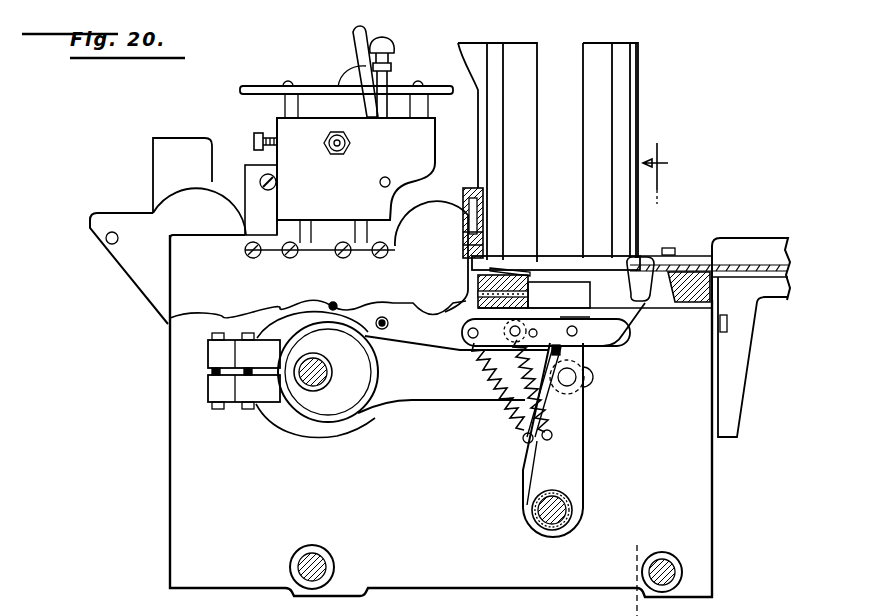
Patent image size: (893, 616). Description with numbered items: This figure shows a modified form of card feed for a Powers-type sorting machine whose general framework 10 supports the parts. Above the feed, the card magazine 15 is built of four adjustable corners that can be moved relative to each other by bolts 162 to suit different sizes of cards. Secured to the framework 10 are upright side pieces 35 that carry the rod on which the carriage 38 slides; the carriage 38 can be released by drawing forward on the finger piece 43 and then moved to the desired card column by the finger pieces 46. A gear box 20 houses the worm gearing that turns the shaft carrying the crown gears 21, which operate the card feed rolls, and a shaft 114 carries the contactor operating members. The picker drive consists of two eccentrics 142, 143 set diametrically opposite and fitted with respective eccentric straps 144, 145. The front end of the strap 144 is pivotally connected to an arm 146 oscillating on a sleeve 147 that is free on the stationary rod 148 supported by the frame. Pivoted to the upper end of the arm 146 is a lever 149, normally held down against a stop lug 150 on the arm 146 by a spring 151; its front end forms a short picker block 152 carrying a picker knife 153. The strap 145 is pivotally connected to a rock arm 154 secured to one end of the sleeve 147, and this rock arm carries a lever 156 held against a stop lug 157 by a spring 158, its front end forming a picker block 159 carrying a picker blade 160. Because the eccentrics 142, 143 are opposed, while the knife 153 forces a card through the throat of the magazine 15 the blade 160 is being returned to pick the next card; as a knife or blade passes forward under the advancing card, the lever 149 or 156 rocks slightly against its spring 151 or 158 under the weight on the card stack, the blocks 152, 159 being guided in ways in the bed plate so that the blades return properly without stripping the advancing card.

The framework 10 is at (690, 535).
The card magazine 15 is at (623, 127).
The gear box 20 is at (199, 186).
The crown gears 21 is at (668, 173).
The upright side pieces 35 is at (354, 189).
The carriage 38 is at (253, 172).
The finger piece 43 is at (356, 50).
The finger pieces 46 is at (387, 52).
The shaft 114 is at (313, 384).
The eccentric 142 is at (337, 403).
The eccentric 143 is at (277, 412).
The eccentric strap 144 is at (410, 390).
The eccentric strap 145 is at (257, 415).
The arm 146 is at (572, 432).
The sleeve 147 is at (567, 496).
The stationary rod 148 is at (570, 510).
The lever 149 is at (586, 325).
The stop lug 150 is at (570, 353).
The spring 151 is at (530, 384).
The picker block 152 is at (620, 310).
The picker knife 153 is at (640, 255).
The rock arm 154 is at (525, 463).
The lever 156 is at (462, 331).
The stop lug 157 is at (522, 363).
The spring 158 is at (508, 409).
The picker block 159 is at (583, 265).
The picker blade 160 is at (597, 260).
The bolts 162 is at (672, 247).